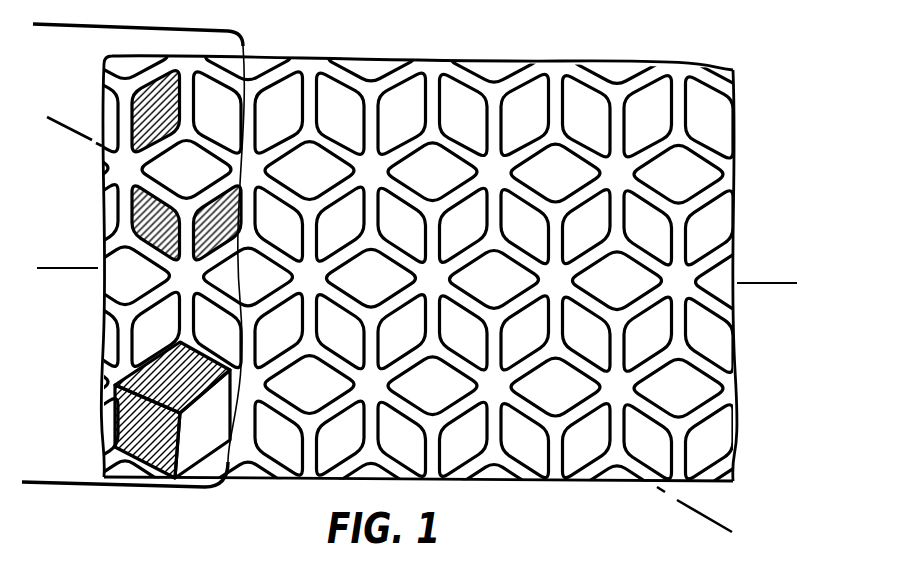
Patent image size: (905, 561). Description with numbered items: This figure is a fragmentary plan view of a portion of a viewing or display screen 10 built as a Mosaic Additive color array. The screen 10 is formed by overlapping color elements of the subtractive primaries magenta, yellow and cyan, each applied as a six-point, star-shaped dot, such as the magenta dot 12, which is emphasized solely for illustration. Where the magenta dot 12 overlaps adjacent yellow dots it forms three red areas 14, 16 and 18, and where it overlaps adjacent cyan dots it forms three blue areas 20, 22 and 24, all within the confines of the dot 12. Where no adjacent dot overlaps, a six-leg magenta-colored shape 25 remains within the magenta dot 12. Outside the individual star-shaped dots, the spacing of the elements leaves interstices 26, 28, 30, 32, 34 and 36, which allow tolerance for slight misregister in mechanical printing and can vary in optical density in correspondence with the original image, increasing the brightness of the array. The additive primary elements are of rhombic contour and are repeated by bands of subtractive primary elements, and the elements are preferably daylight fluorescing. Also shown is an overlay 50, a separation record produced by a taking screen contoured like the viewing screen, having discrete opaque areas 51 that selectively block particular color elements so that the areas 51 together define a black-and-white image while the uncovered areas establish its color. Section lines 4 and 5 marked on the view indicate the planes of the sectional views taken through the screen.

The viewing screen 10 is at (750, 91).
The magenta dot 12 is at (512, 278).
The red area 14 is at (482, 162).
The red area 16 is at (480, 345).
The red area 18 is at (322, 290).
The blue area 20 is at (387, 188).
The blue area 22 is at (555, 308).
The blue area 24 is at (388, 350).
The six-leg magenta-colored shape 25 is at (433, 292).
The interstice 26 is at (497, 245).
The interstice 28 is at (500, 345).
The interstice 30 is at (378, 392).
The interstice 32 is at (360, 308).
The interstice 34 is at (372, 245).
The interstice 36 is at (443, 196).
The overlay 50 is at (90, 494).
The opaque areas 51 is at (128, 143).
The section line 4- 4 is at (67, 277).
The section line 5- 5 is at (60, 131).